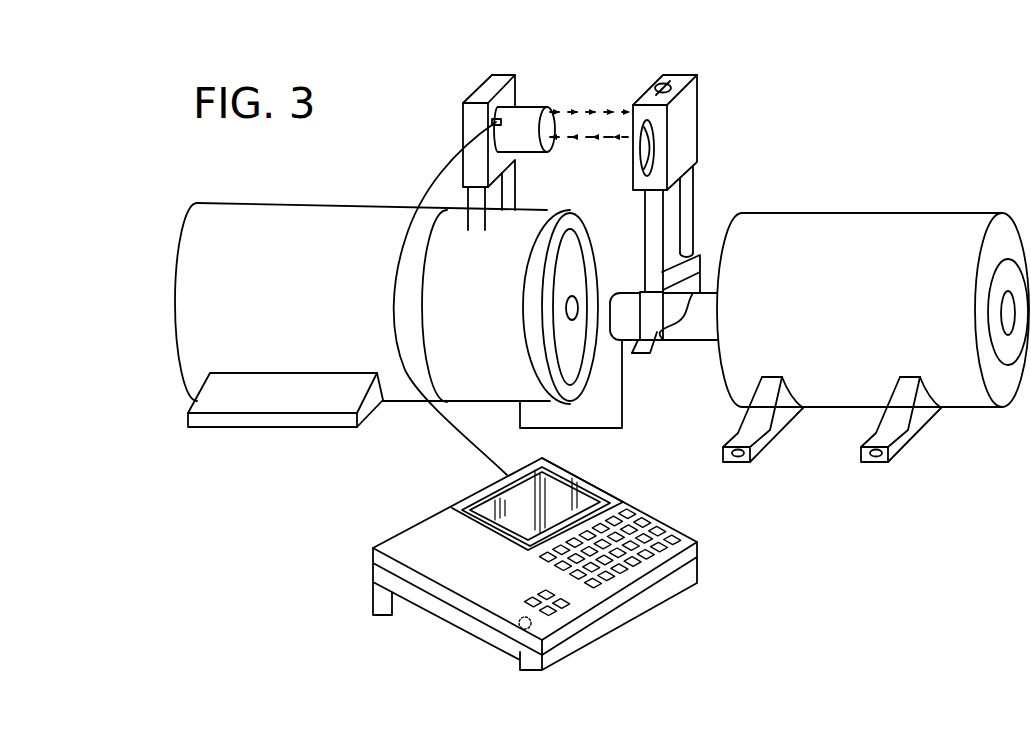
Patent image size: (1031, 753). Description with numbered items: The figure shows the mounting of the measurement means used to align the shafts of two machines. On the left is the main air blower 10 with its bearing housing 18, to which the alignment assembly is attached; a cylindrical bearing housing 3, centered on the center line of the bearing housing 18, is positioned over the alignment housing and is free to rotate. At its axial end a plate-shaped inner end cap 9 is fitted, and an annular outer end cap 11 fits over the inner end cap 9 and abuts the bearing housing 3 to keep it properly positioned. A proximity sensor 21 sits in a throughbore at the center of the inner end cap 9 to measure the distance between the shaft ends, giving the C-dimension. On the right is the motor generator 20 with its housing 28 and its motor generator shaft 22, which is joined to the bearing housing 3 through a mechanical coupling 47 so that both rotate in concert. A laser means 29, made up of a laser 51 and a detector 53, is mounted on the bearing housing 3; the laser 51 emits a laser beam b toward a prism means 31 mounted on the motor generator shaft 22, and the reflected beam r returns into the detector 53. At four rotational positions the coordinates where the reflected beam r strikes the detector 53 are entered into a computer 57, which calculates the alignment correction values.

The main air blower 10 is at (168, 303).
The bearing housing of main air blower 18 is at (341, 203).
The cylindrical bearing housing 3 is at (534, 217).
The annular outer end cap 11 is at (572, 225).
The plate-shaped inner end cap 9 is at (572, 260).
The proximity sensor 21 is at (575, 300).
The mechanical coupling 47 is at (607, 428).
The motor generator shaft 22 is at (692, 345).
The laser means 29 is at (527, 90).
The laser 51 is at (540, 105).
The detector 53 is at (549, 152).
The laser beam b is at (603, 110).
The reflected beam r is at (603, 140).
The prism means 31 is at (703, 80).
The motor generator 20 is at (825, 211).
The housing of motor generator 28 is at (957, 217).
The computer 57 is at (470, 627).